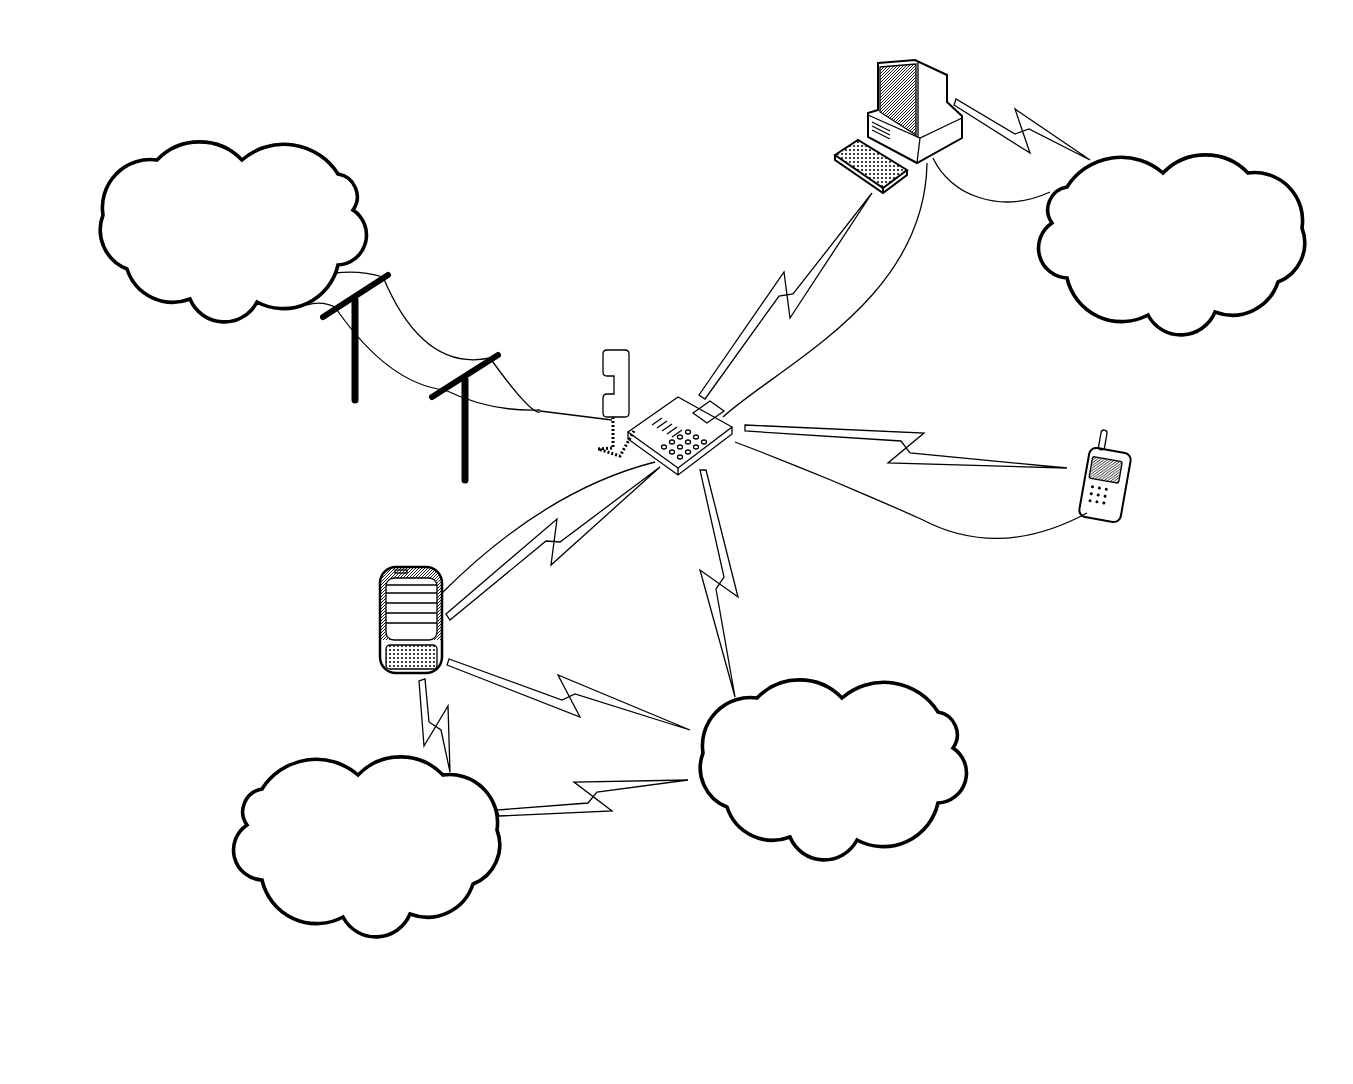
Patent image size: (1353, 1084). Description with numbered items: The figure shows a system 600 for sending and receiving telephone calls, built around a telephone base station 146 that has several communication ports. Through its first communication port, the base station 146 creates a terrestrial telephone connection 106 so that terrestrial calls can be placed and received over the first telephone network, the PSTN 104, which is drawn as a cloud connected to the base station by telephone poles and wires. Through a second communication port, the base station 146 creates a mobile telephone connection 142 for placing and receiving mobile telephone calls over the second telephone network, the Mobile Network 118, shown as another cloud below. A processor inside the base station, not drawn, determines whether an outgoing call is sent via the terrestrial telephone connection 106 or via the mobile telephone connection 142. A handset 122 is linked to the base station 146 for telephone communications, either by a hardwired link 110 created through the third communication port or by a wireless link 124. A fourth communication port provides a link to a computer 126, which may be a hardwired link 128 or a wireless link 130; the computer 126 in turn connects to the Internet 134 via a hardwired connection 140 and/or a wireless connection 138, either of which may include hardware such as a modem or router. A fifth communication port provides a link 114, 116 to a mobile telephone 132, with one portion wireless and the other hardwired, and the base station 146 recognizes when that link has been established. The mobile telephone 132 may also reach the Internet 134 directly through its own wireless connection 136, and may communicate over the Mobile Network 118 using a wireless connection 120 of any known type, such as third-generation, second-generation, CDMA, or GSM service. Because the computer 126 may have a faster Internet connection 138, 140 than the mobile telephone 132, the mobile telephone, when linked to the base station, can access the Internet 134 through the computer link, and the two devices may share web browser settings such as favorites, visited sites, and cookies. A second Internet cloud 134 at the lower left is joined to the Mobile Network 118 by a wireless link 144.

The system 600 is at (476, 100).
The first telephone network (PSTN) 104 is at (363, 227).
The terrestrial telephone connection 106 is at (548, 407).
The link 110 is at (973, 537).
The link 114 is at (500, 578).
The link 116 is at (533, 518).
The second telephone network (Mobile Network) 118 is at (938, 715).
The wireless connection 120 is at (615, 707).
The handset 122 is at (1135, 488).
The wireless link 124 is at (873, 430).
The computer 126 is at (868, 118).
The hardwired link 128 is at (840, 318).
The wireless link 130 is at (776, 283).
The mobile telephone 132 is at (385, 578).
The Internet 134 is at (1177, 160).
The wireless connection 136 is at (452, 728).
The wireless connection 138 is at (1040, 117).
The hardwired connection 140 is at (1023, 215).
The mobile telephone connection 142 is at (735, 570).
The wireless communication link 144 is at (560, 803).
The base station 146 is at (645, 417).